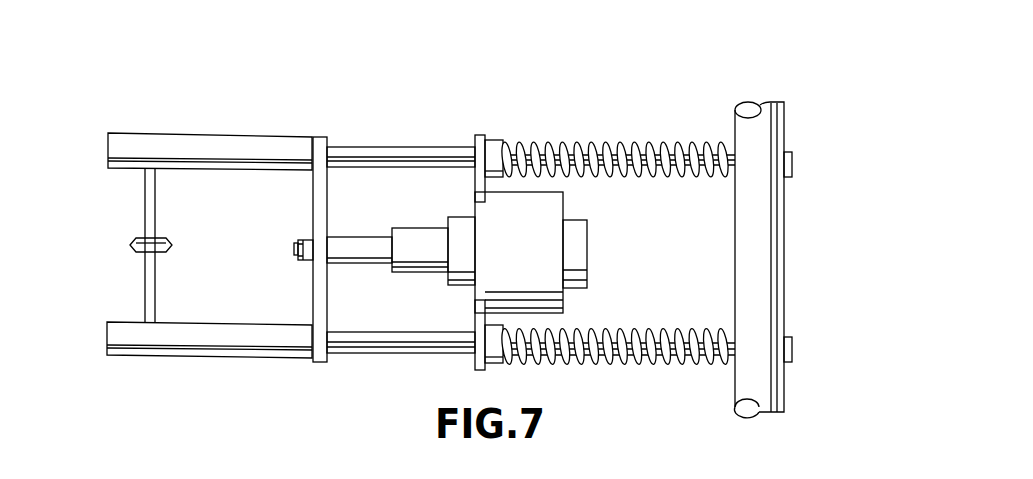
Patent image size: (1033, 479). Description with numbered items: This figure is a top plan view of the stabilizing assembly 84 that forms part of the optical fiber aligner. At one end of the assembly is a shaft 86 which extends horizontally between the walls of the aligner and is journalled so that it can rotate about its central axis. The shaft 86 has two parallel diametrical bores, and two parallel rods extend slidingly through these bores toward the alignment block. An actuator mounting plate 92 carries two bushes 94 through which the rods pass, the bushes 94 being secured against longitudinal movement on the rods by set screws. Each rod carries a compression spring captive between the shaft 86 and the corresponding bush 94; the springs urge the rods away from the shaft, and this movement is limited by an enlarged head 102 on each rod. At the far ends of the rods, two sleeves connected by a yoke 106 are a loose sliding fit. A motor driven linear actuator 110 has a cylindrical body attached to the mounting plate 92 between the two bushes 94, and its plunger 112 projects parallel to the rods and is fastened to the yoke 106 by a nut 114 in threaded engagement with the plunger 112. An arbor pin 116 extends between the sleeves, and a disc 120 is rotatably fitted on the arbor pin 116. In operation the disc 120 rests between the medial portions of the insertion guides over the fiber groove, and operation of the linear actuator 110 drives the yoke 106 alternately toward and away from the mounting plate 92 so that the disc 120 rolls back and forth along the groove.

The stabilizing assembly 84 is at (559, 86).
The shaft 86 is at (784, 270).
The actuator mounting plate 92 is at (475, 182).
The bushes 94 is at (488, 136).
The enlarged head 102 is at (792, 165).
The yoke 106 is at (313, 203).
The motor driven linear actuator 110 is at (587, 252).
The plunger 112 is at (372, 272).
The nut 114 is at (298, 262).
The arbor pin 116 is at (145, 280).
The disc 120 is at (130, 242).